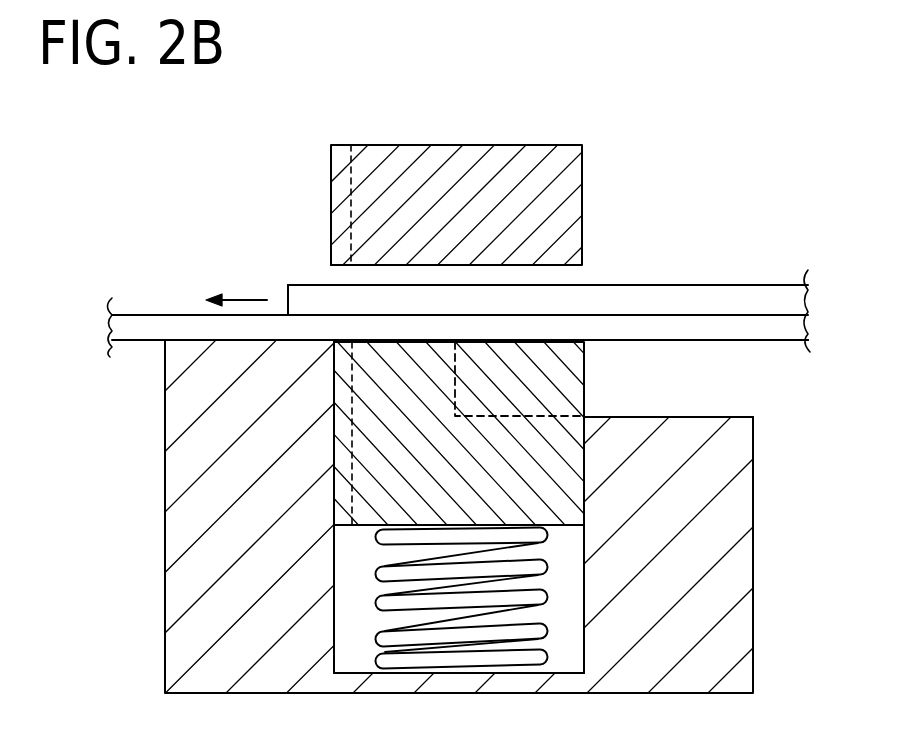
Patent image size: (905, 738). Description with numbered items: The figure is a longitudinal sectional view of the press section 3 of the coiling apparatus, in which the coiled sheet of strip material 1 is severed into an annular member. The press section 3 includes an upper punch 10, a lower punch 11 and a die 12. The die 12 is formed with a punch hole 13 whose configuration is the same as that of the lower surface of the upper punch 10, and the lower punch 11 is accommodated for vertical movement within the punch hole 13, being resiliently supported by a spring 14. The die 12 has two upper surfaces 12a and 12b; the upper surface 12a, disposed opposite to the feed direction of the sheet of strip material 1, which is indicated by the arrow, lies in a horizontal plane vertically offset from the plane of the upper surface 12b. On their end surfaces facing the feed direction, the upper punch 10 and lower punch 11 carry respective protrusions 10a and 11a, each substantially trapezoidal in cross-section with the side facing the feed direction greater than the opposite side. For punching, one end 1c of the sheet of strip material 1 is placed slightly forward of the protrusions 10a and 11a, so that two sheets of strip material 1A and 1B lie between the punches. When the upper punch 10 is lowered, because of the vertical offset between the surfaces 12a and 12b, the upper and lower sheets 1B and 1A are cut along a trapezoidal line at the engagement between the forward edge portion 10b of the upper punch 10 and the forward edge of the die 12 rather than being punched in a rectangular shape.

The press section 3 is at (160, 186).
The sheet of strip material 1 is at (140, 313).
The lower sheet of strip material 1A is at (789, 330).
The upper sheet of strip material 1B is at (713, 293).
The one end of the sheet of strip material 1c is at (287, 299).
The upper punch 10 is at (582, 163).
The protrusion of the upper punch 10a is at (340, 163).
The edge portion of the upper punch 10b is at (330, 265).
The lower punch 11 is at (584, 362).
The protrusion of the lower punch 11a is at (340, 452).
The die 12 is at (175, 412).
The upper surface of the die 12a is at (707, 417).
The upper surface of the die 12b is at (331, 344).
The punch hole 13 is at (355, 563).
The spring 14 is at (378, 605).